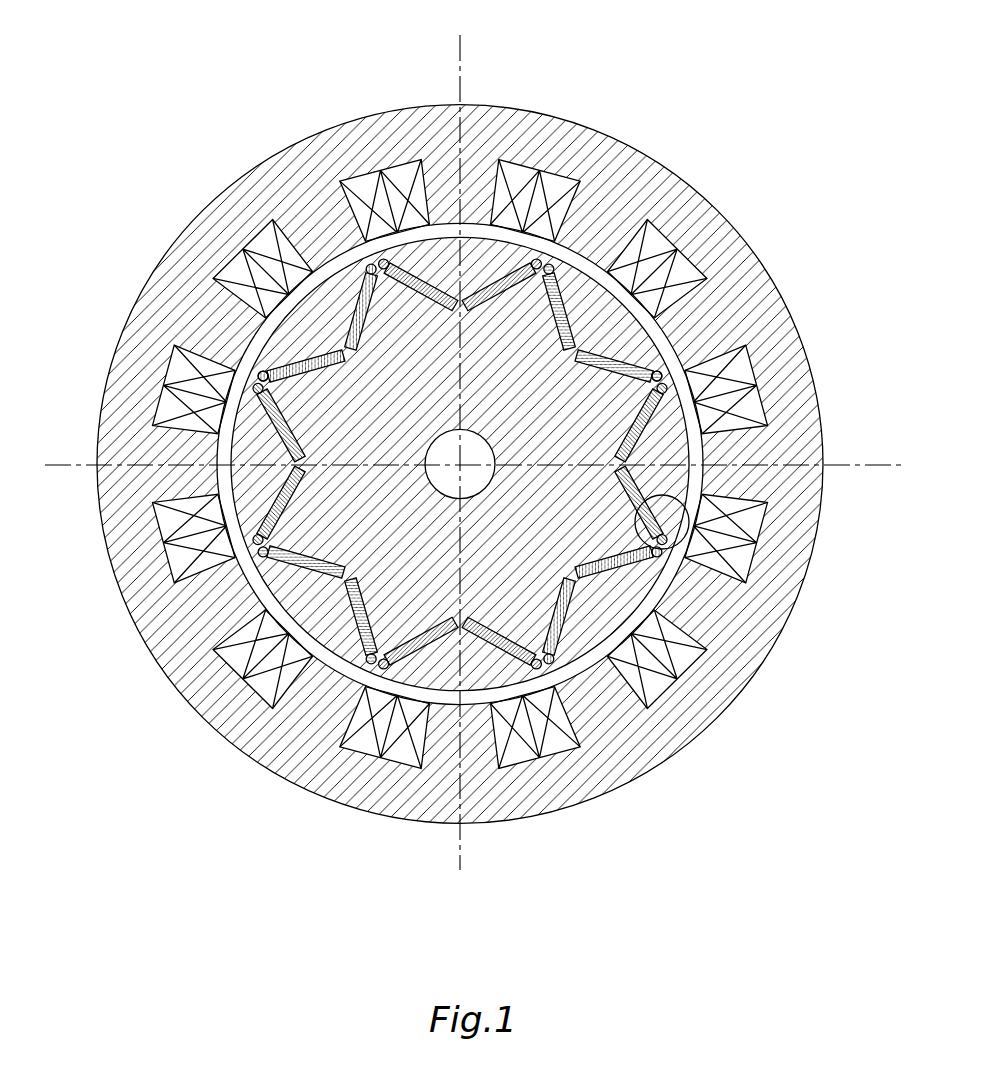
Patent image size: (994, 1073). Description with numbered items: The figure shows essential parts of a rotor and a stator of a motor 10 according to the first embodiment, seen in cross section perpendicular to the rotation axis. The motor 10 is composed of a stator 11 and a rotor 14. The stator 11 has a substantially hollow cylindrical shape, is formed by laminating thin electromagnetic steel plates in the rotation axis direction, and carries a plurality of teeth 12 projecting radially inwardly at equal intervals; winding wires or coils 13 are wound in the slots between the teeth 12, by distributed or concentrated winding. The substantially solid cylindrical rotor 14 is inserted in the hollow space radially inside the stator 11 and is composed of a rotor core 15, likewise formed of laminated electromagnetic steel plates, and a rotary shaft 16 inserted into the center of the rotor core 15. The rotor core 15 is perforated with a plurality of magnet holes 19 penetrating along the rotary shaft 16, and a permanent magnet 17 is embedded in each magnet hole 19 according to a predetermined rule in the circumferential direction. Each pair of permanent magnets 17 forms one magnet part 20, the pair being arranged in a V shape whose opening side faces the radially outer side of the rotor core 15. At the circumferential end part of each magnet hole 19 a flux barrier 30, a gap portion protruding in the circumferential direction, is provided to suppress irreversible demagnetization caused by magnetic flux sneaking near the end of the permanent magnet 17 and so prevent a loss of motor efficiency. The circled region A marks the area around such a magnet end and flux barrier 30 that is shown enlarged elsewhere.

The motor 10 is at (653, 104).
The stator 11 is at (720, 210).
The teeth 12 is at (593, 237).
The winding wires (coils) 13 is at (758, 365).
The rotor 14 is at (643, 583).
The rotor core 15 is at (668, 630).
The rotary shaft 16 is at (423, 453).
The permanent magnet 17 is at (654, 364).
The magnet hole 19 is at (567, 634).
The magnet part 20 is at (338, 334).
The flux barrier 30 is at (566, 648).
The region A is at (700, 493).